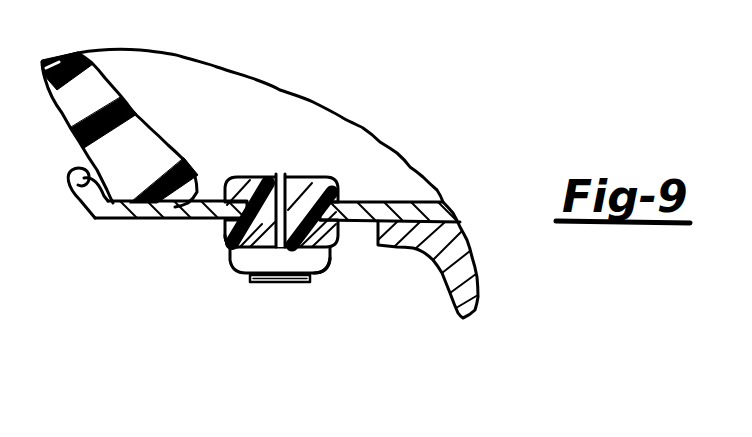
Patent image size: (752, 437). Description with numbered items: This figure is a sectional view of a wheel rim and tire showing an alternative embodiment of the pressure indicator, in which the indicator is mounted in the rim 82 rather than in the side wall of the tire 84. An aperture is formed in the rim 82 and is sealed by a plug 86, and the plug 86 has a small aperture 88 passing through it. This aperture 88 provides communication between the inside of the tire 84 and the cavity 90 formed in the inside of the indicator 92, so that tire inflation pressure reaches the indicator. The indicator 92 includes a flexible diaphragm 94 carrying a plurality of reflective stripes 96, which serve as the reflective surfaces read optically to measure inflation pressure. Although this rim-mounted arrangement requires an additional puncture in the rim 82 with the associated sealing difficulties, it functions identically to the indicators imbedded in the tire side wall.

The rim 82 is at (373, 200).
The tire 84 is at (122, 98).
The plug 86 is at (320, 175).
The aperture 88 is at (278, 178).
The cavity 90 is at (245, 260).
The indicator 92 is at (224, 246).
The flexible diaphragm 94 is at (327, 267).
The reflective stripes 96 is at (263, 283).